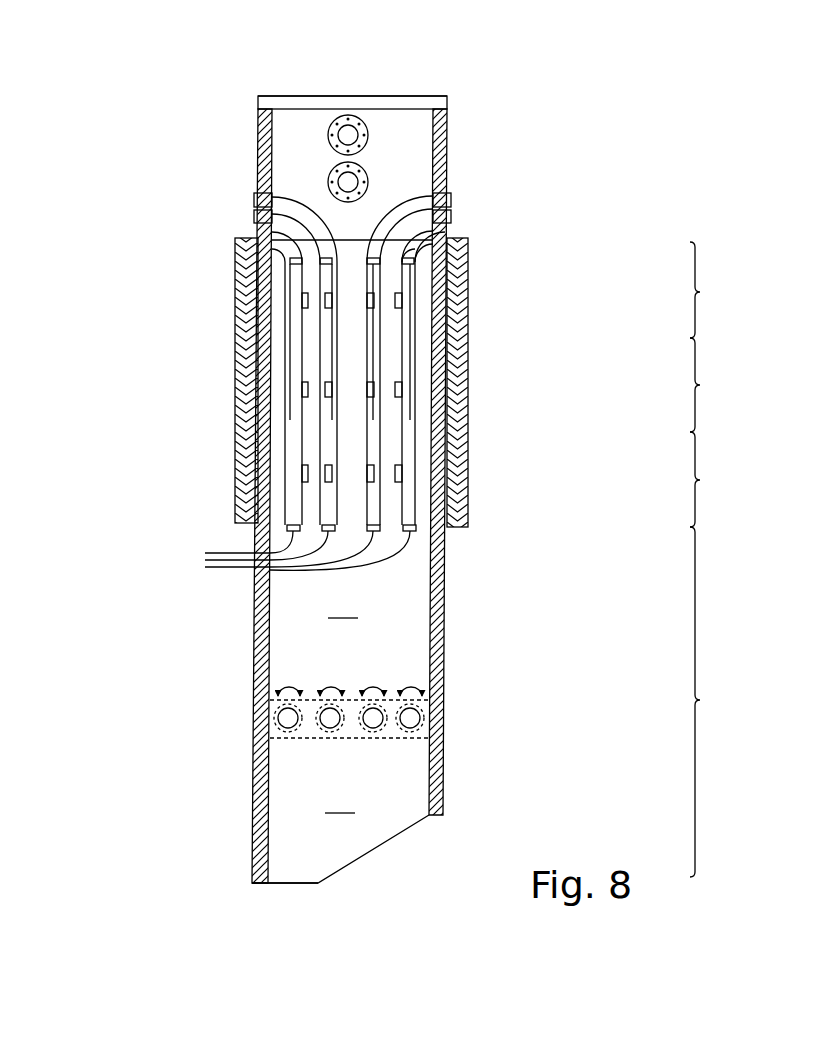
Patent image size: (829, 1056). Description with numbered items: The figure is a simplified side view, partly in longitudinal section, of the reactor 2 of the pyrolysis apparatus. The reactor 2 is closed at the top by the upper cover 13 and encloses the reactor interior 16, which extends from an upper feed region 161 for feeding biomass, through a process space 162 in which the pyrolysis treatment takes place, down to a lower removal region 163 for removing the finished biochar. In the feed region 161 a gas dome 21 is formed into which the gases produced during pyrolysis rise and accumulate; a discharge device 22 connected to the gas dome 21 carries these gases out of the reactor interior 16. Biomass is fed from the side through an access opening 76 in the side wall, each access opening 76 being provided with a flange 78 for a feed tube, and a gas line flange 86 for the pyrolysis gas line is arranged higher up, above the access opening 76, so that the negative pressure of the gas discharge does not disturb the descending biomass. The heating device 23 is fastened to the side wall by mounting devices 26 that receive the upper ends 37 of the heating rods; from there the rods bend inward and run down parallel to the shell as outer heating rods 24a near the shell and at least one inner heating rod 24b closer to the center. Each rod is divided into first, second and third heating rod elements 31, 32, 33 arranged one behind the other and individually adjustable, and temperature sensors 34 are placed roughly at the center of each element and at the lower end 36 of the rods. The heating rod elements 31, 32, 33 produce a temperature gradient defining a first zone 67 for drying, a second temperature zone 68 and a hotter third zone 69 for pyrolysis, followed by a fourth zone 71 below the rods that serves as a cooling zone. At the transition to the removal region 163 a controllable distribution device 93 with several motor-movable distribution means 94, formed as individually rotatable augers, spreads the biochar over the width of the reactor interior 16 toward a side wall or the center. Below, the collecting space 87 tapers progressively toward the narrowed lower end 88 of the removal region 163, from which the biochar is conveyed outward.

The reactor 2 is at (150, 157).
The upper cover 13 is at (425, 85).
The reactor interior 16 is at (350, 590).
The gas dome 21 is at (288, 122).
The discharge device 22 is at (366, 112).
The heating device 23 is at (272, 190).
The outer heating rods 24a is at (293, 357).
The inner heating rod 24b is at (330, 360).
The mounting devices 26 is at (254, 213).
The first heating rod elements 31 is at (290, 276).
The second heating rod elements 32 is at (293, 416).
The third heating rod elements 33 is at (293, 498).
The temperature sensors 34 is at (325, 300).
The lower end of the heating rods 36 is at (418, 530).
The upper ends of the heating rods 37 is at (256, 221).
The first zone 67 is at (713, 290).
The second temperature zone 68 is at (713, 385).
The third zone 69 is at (713, 479).
The fourth zone 71 is at (713, 702).
The access opening 76 is at (352, 182).
The flange 78 is at (365, 165).
The gas line flange 86 is at (365, 128).
The collecting space 87 is at (340, 802).
The lower end 88 is at (290, 883).
The distribution device 93 is at (305, 693).
The distribution means 94 is at (410, 736).
The upper feed region 161 is at (310, 118).
The process space 162 is at (422, 548).
The lower removal region 163 is at (413, 763).